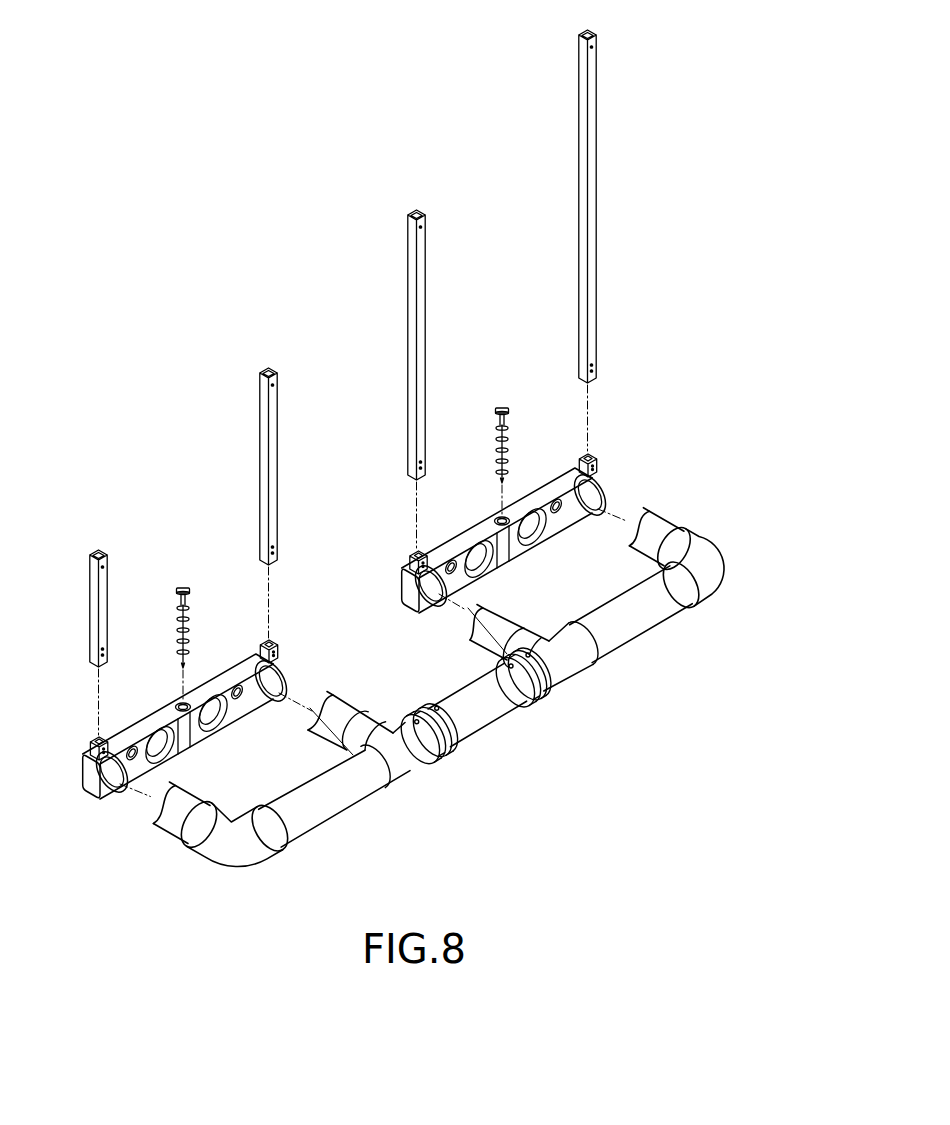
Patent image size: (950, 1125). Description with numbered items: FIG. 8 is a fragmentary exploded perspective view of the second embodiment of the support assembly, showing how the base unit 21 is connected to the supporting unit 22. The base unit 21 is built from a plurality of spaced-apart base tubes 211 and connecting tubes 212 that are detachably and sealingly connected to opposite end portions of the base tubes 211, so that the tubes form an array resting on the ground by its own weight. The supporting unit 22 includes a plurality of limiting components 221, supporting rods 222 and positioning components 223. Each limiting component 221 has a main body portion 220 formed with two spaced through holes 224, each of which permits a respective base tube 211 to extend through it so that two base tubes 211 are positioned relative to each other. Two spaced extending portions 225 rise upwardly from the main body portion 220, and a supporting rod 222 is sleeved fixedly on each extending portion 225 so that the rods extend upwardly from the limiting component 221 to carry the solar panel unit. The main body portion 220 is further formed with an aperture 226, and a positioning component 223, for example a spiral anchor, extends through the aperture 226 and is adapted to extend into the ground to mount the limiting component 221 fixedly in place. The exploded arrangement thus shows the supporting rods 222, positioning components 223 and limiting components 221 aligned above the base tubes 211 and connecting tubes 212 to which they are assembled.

The base unit 21 is at (523, 755).
The base tube 211 is at (656, 524).
The connecting tube 212 is at (634, 632).
The supporting unit 22 is at (618, 111).
The main body portion 220 is at (478, 538).
The limiting component 221 is at (631, 456).
The supporting rod 222 is at (597, 283).
The positioning component 223 is at (508, 424).
The through hole 224 is at (600, 494).
The extending portion 225 is at (412, 558).
The aperture 226 is at (505, 516).